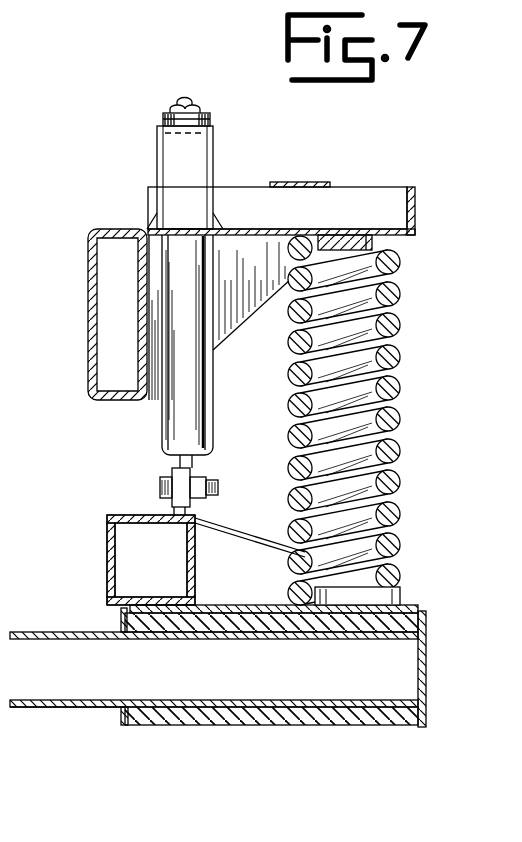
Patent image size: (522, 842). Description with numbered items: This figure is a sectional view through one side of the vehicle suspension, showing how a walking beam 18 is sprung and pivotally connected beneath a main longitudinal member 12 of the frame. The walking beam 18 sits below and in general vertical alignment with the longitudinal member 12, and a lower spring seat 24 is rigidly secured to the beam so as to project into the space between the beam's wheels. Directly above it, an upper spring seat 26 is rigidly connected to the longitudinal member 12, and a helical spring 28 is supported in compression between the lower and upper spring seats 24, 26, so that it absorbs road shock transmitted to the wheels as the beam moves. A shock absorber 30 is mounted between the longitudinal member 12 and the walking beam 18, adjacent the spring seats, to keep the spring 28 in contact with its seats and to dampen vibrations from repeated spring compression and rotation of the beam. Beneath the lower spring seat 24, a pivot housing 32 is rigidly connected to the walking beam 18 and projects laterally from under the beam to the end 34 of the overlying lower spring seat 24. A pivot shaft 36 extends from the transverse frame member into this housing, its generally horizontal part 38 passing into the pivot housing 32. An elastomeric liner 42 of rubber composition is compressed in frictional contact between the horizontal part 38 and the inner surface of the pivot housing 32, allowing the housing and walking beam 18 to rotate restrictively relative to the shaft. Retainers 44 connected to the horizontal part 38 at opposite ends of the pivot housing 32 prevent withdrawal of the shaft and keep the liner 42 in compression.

The main longitudinal member 12 is at (88, 320).
The walking beam 18 is at (107, 545).
The lower spring seat 24 is at (262, 566).
The upper spring seat 26 is at (360, 197).
The helical spring 28 is at (402, 365).
The shock absorber 30 is at (215, 377).
The pivot housing 32 is at (198, 727).
The end of lower spring seat 34 is at (415, 605).
The pivot shaft 36 is at (30, 630).
The horizontal part 38 is at (86, 709).
The elastomeric liner 42 is at (264, 726).
The retainer 44 is at (424, 670).